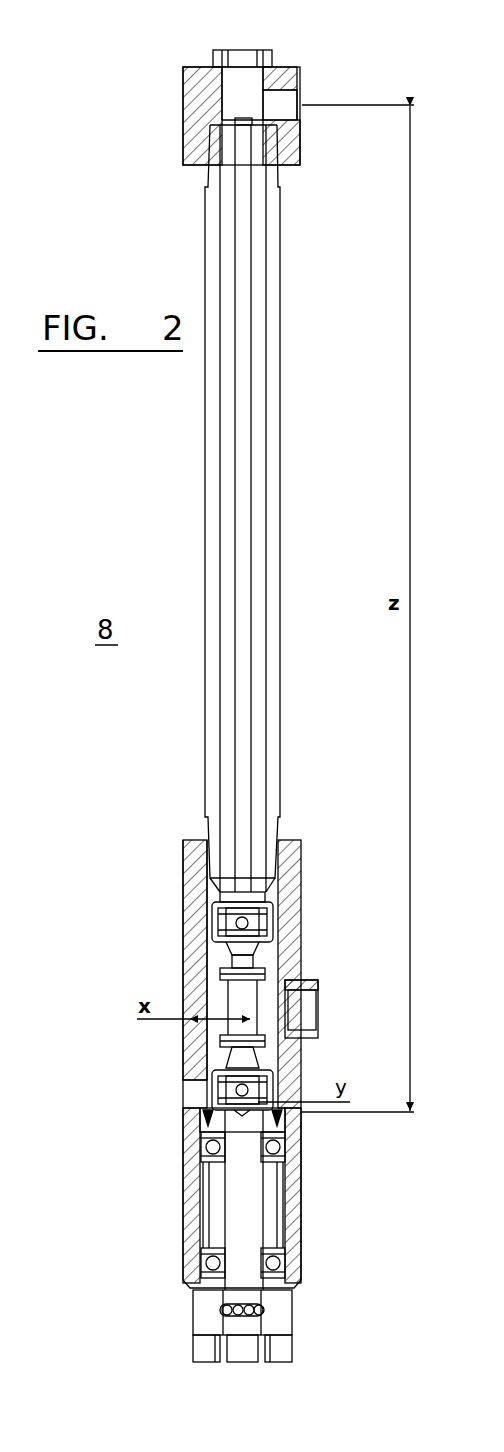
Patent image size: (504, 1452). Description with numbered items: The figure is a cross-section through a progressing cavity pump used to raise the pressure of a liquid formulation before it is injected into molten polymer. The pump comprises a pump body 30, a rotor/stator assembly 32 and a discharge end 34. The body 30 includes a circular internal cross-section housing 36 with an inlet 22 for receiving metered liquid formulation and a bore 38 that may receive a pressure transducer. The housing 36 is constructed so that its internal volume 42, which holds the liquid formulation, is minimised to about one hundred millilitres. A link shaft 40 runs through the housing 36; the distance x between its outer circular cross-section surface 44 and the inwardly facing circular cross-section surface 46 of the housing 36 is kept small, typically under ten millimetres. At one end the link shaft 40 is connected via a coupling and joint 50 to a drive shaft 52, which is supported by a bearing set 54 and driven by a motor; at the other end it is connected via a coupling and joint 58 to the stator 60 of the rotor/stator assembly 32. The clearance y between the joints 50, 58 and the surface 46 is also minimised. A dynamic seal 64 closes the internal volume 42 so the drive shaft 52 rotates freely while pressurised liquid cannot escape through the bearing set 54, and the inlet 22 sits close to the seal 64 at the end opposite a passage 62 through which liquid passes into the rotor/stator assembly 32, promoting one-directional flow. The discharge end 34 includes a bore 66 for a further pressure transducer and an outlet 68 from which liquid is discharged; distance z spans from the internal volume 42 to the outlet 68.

The inlet 22 is at (183, 1093).
The pump body 30 is at (183, 898).
The rotor/stator assembly 32 is at (252, 480).
The discharge end 34 is at (302, 150).
The housing 36 is at (290, 857).
The bore 38 is at (320, 1008).
The link shaft 40 is at (300, 960).
The internal volume 42 is at (248, 992).
The outer circular cross-section surface 44 is at (218, 1000).
The inwardly facing circular cross-section surface 46 is at (183, 940).
The coupling and joint 50 is at (270, 1085).
The drive shaft 52 is at (243, 1190).
The bearing set 54 is at (205, 1262).
The coupling and joint 58 is at (265, 925).
The stator 60 is at (241, 790).
The passage 62 is at (263, 885).
The dynamic seal 64 is at (200, 1120).
The bore 66 is at (243, 50).
The outlet 68 is at (300, 104).